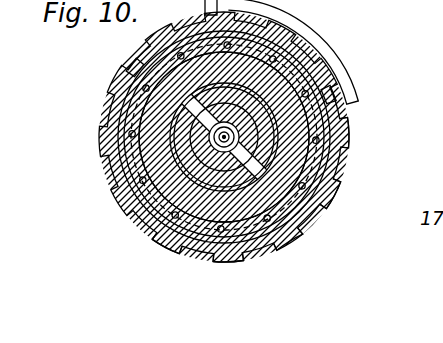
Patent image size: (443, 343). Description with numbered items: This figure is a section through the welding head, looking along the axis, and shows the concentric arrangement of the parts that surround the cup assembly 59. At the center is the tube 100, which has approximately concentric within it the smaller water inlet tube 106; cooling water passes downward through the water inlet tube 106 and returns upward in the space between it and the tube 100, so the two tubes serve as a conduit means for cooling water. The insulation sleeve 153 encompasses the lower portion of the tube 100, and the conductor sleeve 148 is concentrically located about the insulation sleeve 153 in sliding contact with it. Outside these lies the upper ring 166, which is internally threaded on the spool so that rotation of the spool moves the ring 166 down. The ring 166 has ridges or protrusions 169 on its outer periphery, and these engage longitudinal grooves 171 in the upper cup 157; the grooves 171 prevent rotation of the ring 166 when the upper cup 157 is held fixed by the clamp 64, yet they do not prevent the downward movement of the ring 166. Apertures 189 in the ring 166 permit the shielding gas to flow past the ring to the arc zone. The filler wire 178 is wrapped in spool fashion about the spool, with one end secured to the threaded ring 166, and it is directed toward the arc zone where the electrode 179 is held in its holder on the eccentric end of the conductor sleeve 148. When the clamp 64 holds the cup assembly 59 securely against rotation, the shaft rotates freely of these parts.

The clamp 64 is at (275, 2).
The grooves 171 is at (341, 54).
The ridges or protrusions 169 is at (128, 72).
The cup assembly 59 is at (110, 97).
The tube 100 is at (113, 162).
The upper ring 166 is at (150, 232).
The filler wire 178 is at (180, 252).
The apertures 189 is at (306, 196).
The water inlet tube 106 is at (205, 147).
The insulation sleeve 153 is at (255, 130).
The upper cup 157 is at (349, 142).
The conductor sleeve 148 is at (351, 166).
The electrode 179 is at (381, 190).